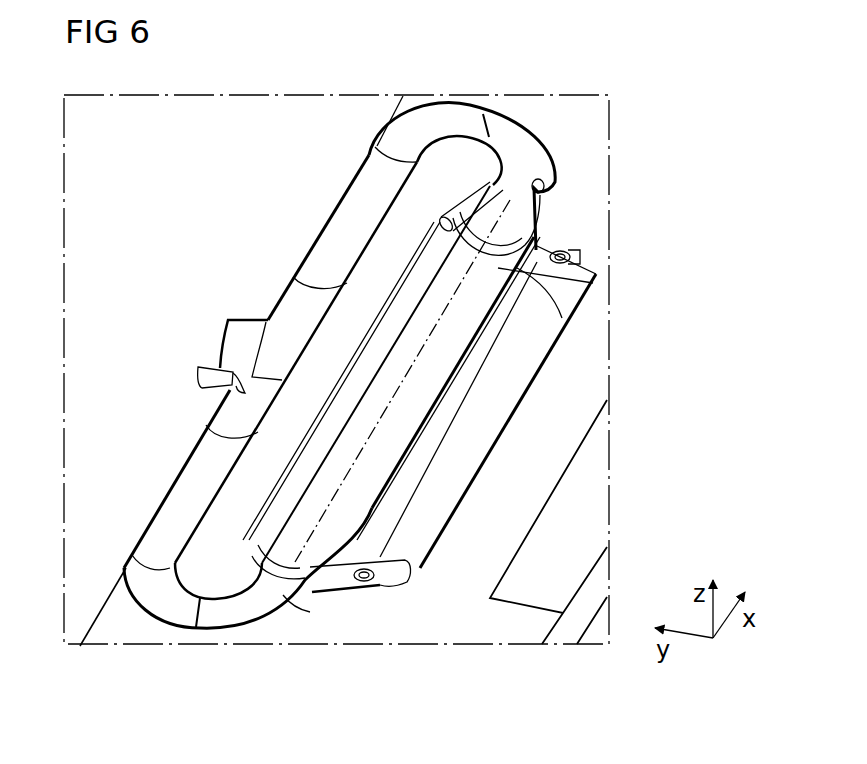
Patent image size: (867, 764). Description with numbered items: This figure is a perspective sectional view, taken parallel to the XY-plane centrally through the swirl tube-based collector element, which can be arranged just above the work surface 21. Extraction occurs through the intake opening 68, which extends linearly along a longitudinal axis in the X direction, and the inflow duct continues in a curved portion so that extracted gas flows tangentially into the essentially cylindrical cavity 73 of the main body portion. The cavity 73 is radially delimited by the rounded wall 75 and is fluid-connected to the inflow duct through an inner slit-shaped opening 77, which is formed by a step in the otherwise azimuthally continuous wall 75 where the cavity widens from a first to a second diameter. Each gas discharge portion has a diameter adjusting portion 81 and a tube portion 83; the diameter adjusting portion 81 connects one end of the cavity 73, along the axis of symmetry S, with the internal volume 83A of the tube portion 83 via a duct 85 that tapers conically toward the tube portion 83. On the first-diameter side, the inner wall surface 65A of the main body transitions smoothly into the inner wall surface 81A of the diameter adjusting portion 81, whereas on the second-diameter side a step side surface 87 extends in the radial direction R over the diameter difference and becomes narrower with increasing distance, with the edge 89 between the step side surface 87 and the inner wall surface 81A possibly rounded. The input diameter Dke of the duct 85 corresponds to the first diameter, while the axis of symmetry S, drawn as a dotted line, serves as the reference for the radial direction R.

The work surface 21 is at (114, 604).
The inner wall surface of the main body portion 65A is at (472, 290).
The intake opening 68 is at (543, 378).
The cylindrical cavity 73 is at (562, 318).
The rounded wall 75 is at (410, 262).
The slit-shaped opening 77 is at (323, 434).
The diameter adjusting portion 81 is at (468, 180).
The inner wall surface of the diameter adjusting portion 81A is at (497, 202).
The tube portion 83 is at (553, 130).
The internal volume of the tube portion 83A is at (537, 167).
The duct 85 is at (540, 220).
The step side surface 87 is at (412, 242).
The edge 89 is at (537, 219).
The radial direction R is at (523, 242).
The axis of symmetry S is at (450, 302).
The input diameter of the duct Dke is at (356, 516).